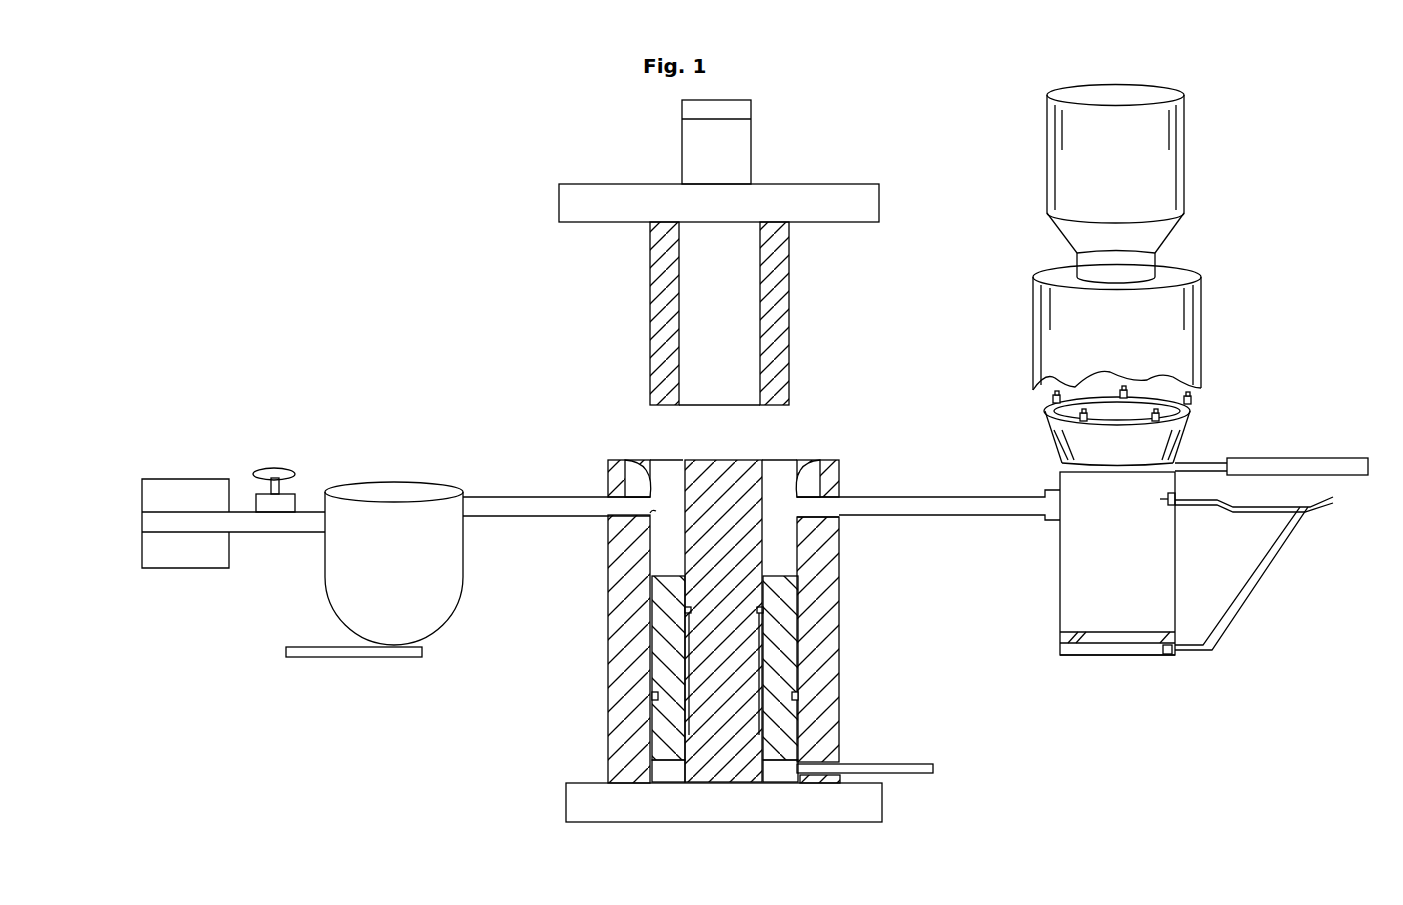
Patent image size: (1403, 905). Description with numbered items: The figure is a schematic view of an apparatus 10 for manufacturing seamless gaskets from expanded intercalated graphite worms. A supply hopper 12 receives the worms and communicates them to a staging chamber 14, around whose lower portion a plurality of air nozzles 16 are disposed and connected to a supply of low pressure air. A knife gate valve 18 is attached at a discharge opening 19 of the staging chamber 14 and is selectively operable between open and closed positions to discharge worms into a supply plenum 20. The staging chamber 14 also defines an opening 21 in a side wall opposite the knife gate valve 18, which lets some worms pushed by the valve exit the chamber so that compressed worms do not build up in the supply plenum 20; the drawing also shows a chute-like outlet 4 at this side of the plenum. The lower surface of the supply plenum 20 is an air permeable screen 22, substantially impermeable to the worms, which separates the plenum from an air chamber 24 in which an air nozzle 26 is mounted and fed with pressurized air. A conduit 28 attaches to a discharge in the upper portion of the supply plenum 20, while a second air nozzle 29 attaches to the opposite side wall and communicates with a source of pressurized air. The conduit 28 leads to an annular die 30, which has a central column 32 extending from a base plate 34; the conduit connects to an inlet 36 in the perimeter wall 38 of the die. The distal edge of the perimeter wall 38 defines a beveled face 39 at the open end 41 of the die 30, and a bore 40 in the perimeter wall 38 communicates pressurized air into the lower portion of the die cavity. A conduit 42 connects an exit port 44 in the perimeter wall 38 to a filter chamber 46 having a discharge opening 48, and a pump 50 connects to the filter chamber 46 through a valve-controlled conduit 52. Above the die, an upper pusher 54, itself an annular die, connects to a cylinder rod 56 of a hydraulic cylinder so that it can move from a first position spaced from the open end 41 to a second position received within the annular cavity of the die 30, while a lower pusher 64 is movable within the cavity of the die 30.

The discharge chute 4 is at (1241, 524).
The apparatus 10 is at (585, 325).
The supply hopper 12 is at (1158, 172).
The staging chamber 14 is at (1173, 310).
The air nozzles 16 is at (1192, 407).
The knife gate valve 18 is at (1175, 472).
The discharge opening 19 is at (1150, 440).
The supply plenum 20 is at (1148, 547).
The opening 21 is at (1060, 465).
The air permeable screen 22 is at (1145, 632).
The air chamber 24 is at (1089, 652).
The air nozzle 26 is at (1165, 654).
The conduit 28 is at (917, 502).
The second air nozzle 29 is at (1167, 502).
The annular die 30 is at (573, 743).
The central column 32 is at (726, 752).
The base plate 34 is at (620, 810).
The inlet 36 is at (797, 508).
The perimeter wall 38 is at (832, 682).
The beveled face 39 is at (797, 500).
The bore 40 is at (893, 773).
The open end 41 is at (657, 470).
The conduit 42 is at (490, 508).
The exit port 44 is at (650, 513).
The filter chamber 46 is at (372, 525).
The discharge opening 48 is at (363, 657).
The pump 50 is at (163, 498).
The valve-controlled conduit 52 is at (304, 513).
The upper pusher 54 is at (782, 303).
The cylinder rod 56 is at (743, 138).
The lower pusher 64 is at (785, 745).